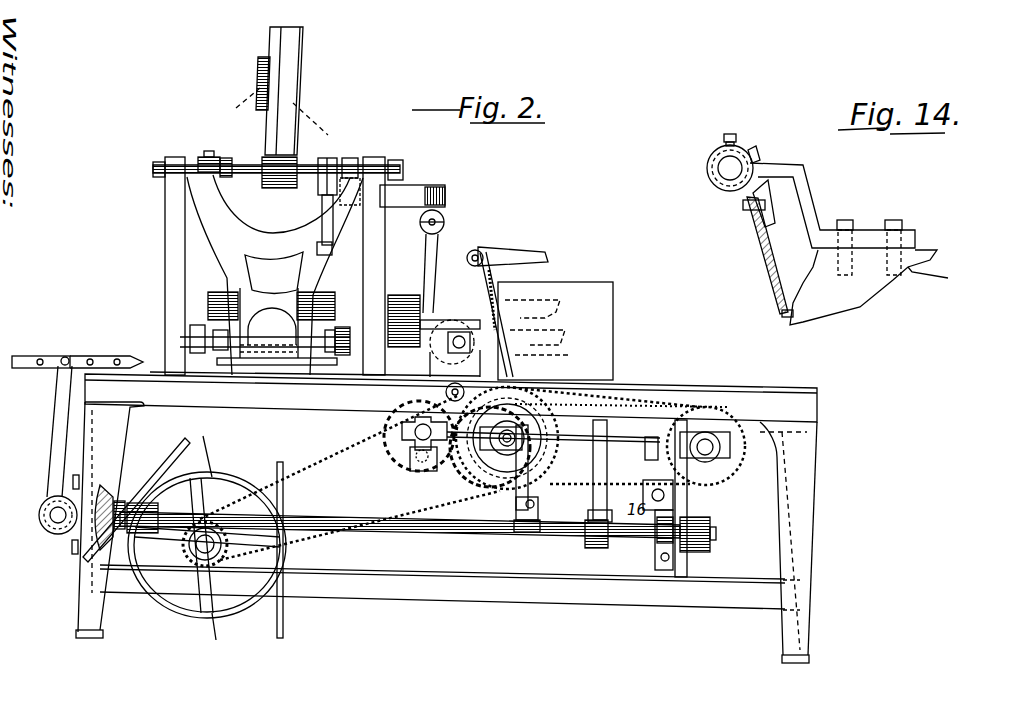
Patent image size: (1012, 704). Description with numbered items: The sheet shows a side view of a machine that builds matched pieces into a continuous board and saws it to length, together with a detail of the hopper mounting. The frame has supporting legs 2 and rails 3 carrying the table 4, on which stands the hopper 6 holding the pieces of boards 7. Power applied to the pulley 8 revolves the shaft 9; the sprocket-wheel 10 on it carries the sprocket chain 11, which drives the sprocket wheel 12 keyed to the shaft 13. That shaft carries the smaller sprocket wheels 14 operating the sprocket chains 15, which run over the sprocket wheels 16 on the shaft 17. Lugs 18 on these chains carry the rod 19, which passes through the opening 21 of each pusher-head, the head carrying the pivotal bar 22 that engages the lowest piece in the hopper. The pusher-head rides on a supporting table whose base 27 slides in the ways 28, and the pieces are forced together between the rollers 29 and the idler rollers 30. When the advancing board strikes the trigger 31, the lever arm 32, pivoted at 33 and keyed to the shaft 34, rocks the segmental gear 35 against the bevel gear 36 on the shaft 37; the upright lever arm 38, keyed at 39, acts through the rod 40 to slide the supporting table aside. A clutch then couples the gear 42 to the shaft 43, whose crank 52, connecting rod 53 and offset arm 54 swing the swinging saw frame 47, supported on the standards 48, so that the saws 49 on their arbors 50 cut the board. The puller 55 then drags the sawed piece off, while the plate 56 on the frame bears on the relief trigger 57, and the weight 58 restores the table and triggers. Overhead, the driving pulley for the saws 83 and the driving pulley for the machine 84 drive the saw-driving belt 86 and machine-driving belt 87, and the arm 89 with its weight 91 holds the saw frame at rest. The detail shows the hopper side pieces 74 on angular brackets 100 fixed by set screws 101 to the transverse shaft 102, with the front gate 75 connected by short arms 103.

In FIG. 2, the supporting legs 2 is at (812, 526).
In FIG. 2, the rails 3 is at (803, 412).
In FIG. 2, the table 4 is at (728, 389).
In FIG. 2, the hopper 6 is at (588, 292).
In FIG. 2, the pieces of boards 7 is at (550, 345).
In FIG. 2, the pulley 8 is at (240, 611).
In FIG. 2, the shaft 9 is at (198, 552).
In FIG. 2, the sprocket-wheel 10 is at (227, 545).
In FIG. 2, the sprocket chain 11 is at (294, 470).
In FIG. 2, the sprocket wheel 12 is at (468, 480).
In FIG. 2, the shaft 13 is at (497, 448).
In FIG. 2, the smaller sprocket wheels 14 is at (545, 472).
In FIG. 2, the sprocket chains 15 is at (643, 488).
In FIG. 2, the sprocket wheels 16 is at (725, 466).
In FIG. 2, the shaft 17 is at (708, 452).
In FIG. 2, the lugs 18 is at (621, 398).
In FIG. 2, the rod 19 is at (590, 396).
In FIG. 2, the opening 21 is at (78, 614).
In FIG. 2, the pivotal bar 22 is at (565, 378).
In FIG. 2, the base of the table 27 is at (632, 442).
In FIG. 2, the ways 28 is at (655, 445).
In FIG. 2, the rollers 29 is at (452, 319).
In FIG. 2, the idler rollers 30 is at (445, 393).
In FIG. 2, the trigger 31 is at (108, 356).
In FIG. 2, the lever arm 32 is at (50, 447).
In FIG. 2, the pivot 33 is at (65, 356).
In FIG. 2, the shaft 34 is at (45, 525).
In FIG. 2, the segmental gear 35 is at (100, 497).
In FIG. 2, the bevel gear 36 is at (120, 505).
In FIG. 2, the shaft 37 is at (332, 526).
In FIG. 2, the upright lever arm 38 is at (546, 478).
In FIG. 2, the key 39 is at (600, 548).
In FIG. 2, the rod 40 is at (553, 444).
In FIG. 2, the gear 42 is at (392, 452).
In FIG. 2, the shaft 43 is at (402, 425).
In FIG. 2, the swinging saw frame 47 is at (215, 235).
In FIG. 2, the standards 48 is at (165, 220).
In FIG. 2, the saws 49 is at (345, 328).
In FIG. 2, the arbors 50 is at (421, 348).
In FIG. 2, the crank 52 is at (420, 471).
In FIG. 2, the connecting rod 53 is at (440, 240).
In FIG. 2, the offset arm 54 is at (420, 185).
In FIG. 2, the puller 55 is at (315, 380).
In FIG. 2, the plate 56 is at (261, 306).
In FIG. 2, the relief trigger 57 is at (190, 332).
In FIG. 2, the weight 58 is at (698, 525).
In FIG. 14, the side pieces 74 is at (881, 287).
In FIG. 14, the front gate 75 is at (757, 247).
In FIG. 2, the driving pulley for the saws 83 is at (320, 126).
In FIG. 2, the driving pulley for the machine 84 is at (235, 102).
In FIG. 2, the saw-driving belt 86 is at (190, 447).
In FIG. 2, the machine-driving belt 87 is at (262, 128).
In FIG. 2, the arm 89 is at (321, 212).
In FIG. 2, the weight 91 is at (318, 190).
In FIG. 14, the angular brackets 100 is at (805, 187).
In FIG. 14, the set screws 101 is at (735, 134).
In FIG. 14, the shaft 102 is at (725, 170).
In FIG. 14, the short arms 103 is at (755, 150).